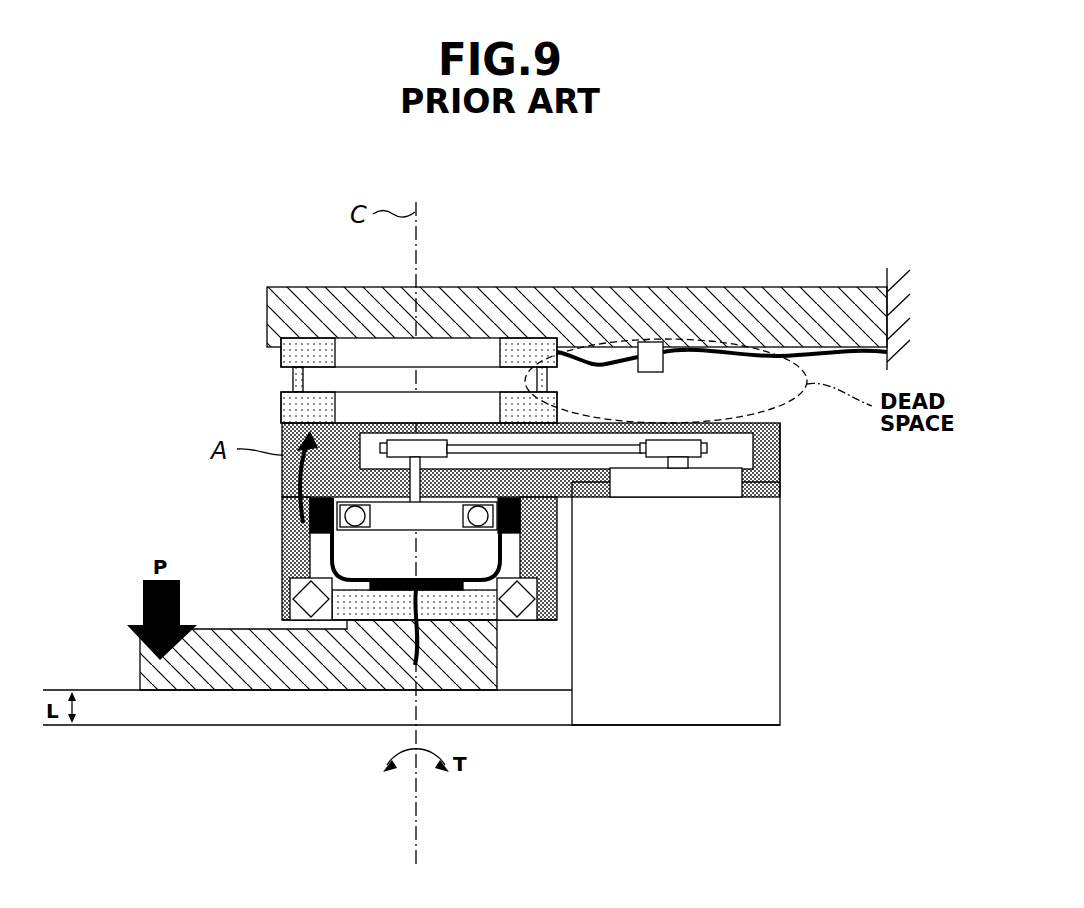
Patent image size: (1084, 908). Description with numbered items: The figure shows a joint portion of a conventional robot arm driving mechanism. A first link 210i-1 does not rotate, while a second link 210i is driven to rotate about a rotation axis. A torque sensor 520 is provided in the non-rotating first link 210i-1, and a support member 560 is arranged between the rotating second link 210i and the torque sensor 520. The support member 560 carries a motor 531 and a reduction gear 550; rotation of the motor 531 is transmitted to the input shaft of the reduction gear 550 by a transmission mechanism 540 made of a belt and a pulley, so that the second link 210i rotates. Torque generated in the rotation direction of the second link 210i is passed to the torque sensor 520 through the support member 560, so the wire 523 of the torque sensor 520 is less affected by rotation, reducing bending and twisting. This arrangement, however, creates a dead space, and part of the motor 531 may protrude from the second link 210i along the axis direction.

The first link 210i-1 is at (712, 308).
The second link 210i is at (318, 662).
The torque sensor 520 is at (258, 356).
The wire 523 is at (600, 360).
The motor 531 is at (770, 620).
The transmission mechanism 540 is at (728, 450).
The reduction gear 550 is at (312, 552).
The support member 560 is at (283, 475).